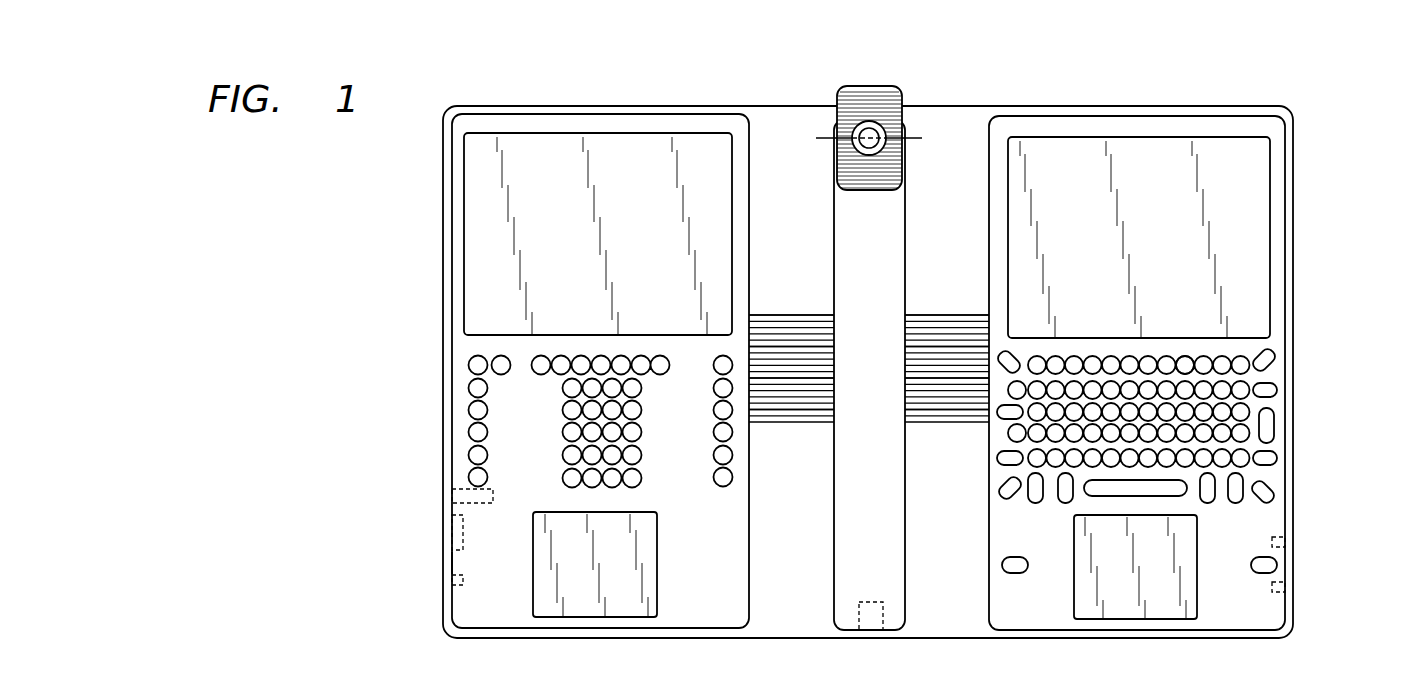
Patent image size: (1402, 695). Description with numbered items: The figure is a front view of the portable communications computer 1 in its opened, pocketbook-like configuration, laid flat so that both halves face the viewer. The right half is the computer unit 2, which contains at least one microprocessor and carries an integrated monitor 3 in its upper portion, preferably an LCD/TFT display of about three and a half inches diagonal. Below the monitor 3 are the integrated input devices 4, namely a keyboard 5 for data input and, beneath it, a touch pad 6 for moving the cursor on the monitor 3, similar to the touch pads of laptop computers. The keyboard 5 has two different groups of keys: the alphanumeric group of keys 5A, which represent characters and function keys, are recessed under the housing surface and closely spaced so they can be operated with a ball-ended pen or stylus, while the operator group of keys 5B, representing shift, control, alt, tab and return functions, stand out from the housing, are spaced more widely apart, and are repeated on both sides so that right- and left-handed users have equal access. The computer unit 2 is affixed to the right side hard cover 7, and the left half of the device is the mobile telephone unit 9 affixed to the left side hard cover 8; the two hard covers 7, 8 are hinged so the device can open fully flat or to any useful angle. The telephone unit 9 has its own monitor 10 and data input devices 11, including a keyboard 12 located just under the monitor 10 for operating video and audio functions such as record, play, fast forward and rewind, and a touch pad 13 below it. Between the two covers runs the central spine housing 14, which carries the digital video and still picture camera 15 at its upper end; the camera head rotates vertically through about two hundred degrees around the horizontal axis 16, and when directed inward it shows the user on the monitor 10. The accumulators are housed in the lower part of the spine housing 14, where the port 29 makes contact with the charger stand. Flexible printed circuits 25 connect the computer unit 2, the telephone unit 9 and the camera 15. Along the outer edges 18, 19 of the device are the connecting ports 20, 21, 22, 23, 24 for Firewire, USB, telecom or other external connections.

The portable communications computer 1 is at (352, 180).
The computer unit 2 is at (970, 128).
The integrated monitor 3 is at (1132, 147).
The integrated input devices 4 is at (1035, 553).
The keyboard 5 is at (1093, 465).
The alphanumeric group of keys 5A is at (1178, 333).
The operator group of keys 5B is at (998, 334).
The touch pad 6 is at (1122, 613).
The right side hard cover 7 is at (931, 593).
The left side hard cover 8 is at (778, 617).
The mobile telephone unit 9 is at (758, 118).
The monitor 10 is at (563, 150).
The data input devices 11 is at (545, 458).
The keyboard 12 is at (620, 463).
The touch pad 13 is at (575, 597).
The spine housing 14 is at (845, 215).
The digital video and still picture camera 15 is at (872, 95).
The horizontal axis 16 is at (914, 138).
The edge of the device 18 is at (450, 562).
The edge of the device 19 is at (1283, 563).
The connecting port 20 is at (453, 490).
The connecting port 21 is at (453, 528).
The connecting port 22 is at (453, 577).
The connecting port 23 is at (1283, 537).
The connecting port 24 is at (1283, 587).
The flexible printed circuits 25 is at (803, 405).
The port 29 is at (868, 620).